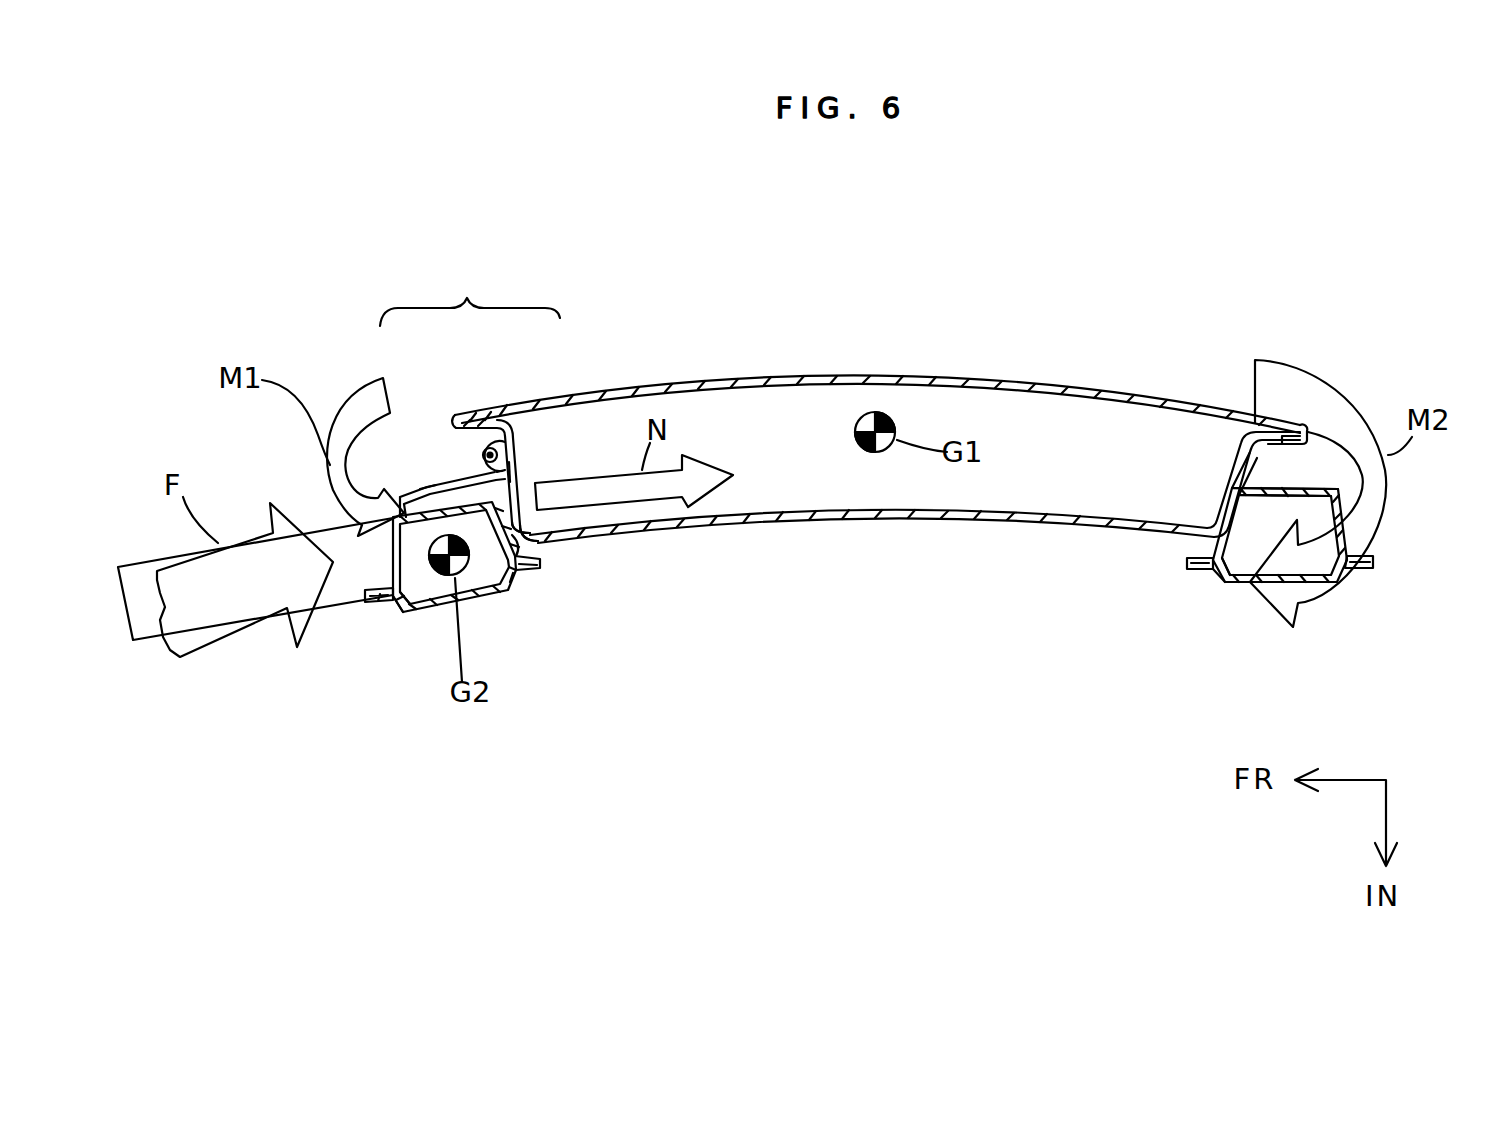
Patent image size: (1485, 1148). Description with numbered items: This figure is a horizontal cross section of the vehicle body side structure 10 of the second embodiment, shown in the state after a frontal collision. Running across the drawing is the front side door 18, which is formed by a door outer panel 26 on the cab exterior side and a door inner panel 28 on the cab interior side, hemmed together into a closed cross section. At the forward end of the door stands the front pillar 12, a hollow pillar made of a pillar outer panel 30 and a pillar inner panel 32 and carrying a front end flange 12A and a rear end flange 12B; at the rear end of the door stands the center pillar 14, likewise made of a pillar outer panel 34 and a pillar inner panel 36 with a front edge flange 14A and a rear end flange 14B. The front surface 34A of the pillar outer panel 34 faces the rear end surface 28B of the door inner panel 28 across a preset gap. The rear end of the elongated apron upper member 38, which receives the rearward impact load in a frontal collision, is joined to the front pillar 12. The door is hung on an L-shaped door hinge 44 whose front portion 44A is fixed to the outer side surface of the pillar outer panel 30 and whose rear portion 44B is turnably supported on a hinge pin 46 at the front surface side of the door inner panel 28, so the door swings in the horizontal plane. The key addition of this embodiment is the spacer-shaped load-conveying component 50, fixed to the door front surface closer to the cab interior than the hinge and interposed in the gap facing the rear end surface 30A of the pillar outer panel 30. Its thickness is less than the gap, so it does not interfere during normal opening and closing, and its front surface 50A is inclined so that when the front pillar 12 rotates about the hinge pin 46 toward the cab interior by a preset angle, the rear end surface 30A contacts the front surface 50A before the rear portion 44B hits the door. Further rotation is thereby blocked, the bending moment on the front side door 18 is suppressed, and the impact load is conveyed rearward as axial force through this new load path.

The vehicle body side structure 10 is at (876, 437).
The front pillar 12 is at (476, 632).
The front end flange 12A is at (375, 612).
The rear end flange 12B is at (545, 575).
The center pillar 14 is at (1298, 598).
The front edge flange 14A is at (1212, 564).
The rear end flange 14B is at (1374, 562).
The front side door 18 is at (876, 417).
The door outer panel 26 is at (955, 376).
The door inner panel 28 is at (915, 457).
The rear end surface 28B is at (1243, 428).
The pillar outer panel 30 is at (420, 508).
The rear end surface 30A is at (535, 520).
The pillar inner panel 32 is at (413, 613).
The pillar outer panel 34 is at (1220, 462).
The front surface 34A is at (1220, 503).
The pillar inner panel 36 is at (1236, 585).
The apron upper member 38 is at (262, 620).
The door hinge 44 is at (470, 375).
The front portion 44A is at (428, 480).
The rear portion 44B is at (516, 470).
The hinge pin 46 is at (460, 418).
The load-conveying component 50 is at (528, 582).
The front surface 50A is at (510, 582).